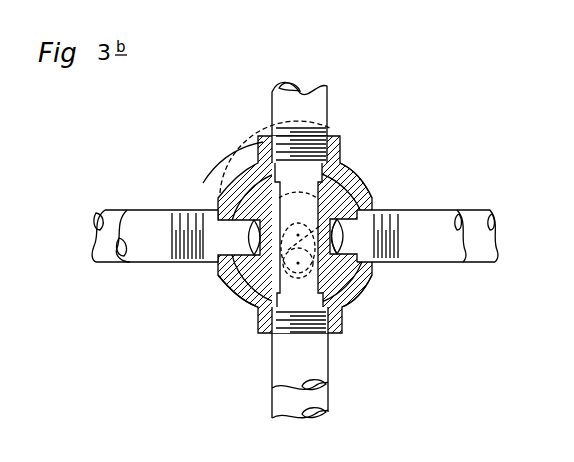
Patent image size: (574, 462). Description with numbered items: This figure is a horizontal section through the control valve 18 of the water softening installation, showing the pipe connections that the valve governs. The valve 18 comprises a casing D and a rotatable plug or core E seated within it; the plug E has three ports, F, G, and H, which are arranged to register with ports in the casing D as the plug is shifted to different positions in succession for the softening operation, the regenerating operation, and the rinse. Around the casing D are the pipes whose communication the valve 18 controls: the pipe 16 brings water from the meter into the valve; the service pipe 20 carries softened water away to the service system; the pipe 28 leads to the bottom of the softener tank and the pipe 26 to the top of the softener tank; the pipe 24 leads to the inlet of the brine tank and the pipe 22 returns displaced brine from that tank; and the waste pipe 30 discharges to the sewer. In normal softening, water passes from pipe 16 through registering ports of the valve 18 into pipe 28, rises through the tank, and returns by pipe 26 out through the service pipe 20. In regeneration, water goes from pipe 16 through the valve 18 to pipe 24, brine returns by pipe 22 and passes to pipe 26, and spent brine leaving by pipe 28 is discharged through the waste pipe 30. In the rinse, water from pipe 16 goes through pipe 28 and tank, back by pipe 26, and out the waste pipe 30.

The pipe 16 is at (329, 114).
The valve 18 is at (343, 161).
The service pipe 20 is at (487, 262).
The pipe 22 is at (418, 212).
The pipe 24 is at (323, 407).
The pipe 26 is at (162, 258).
The pipe 28 is at (323, 366).
The waste pipe 30 is at (108, 258).
The port G is at (250, 196).
The port F is at (356, 198).
The casing D is at (242, 290).
The port H is at (344, 269).
The plug E is at (328, 263).